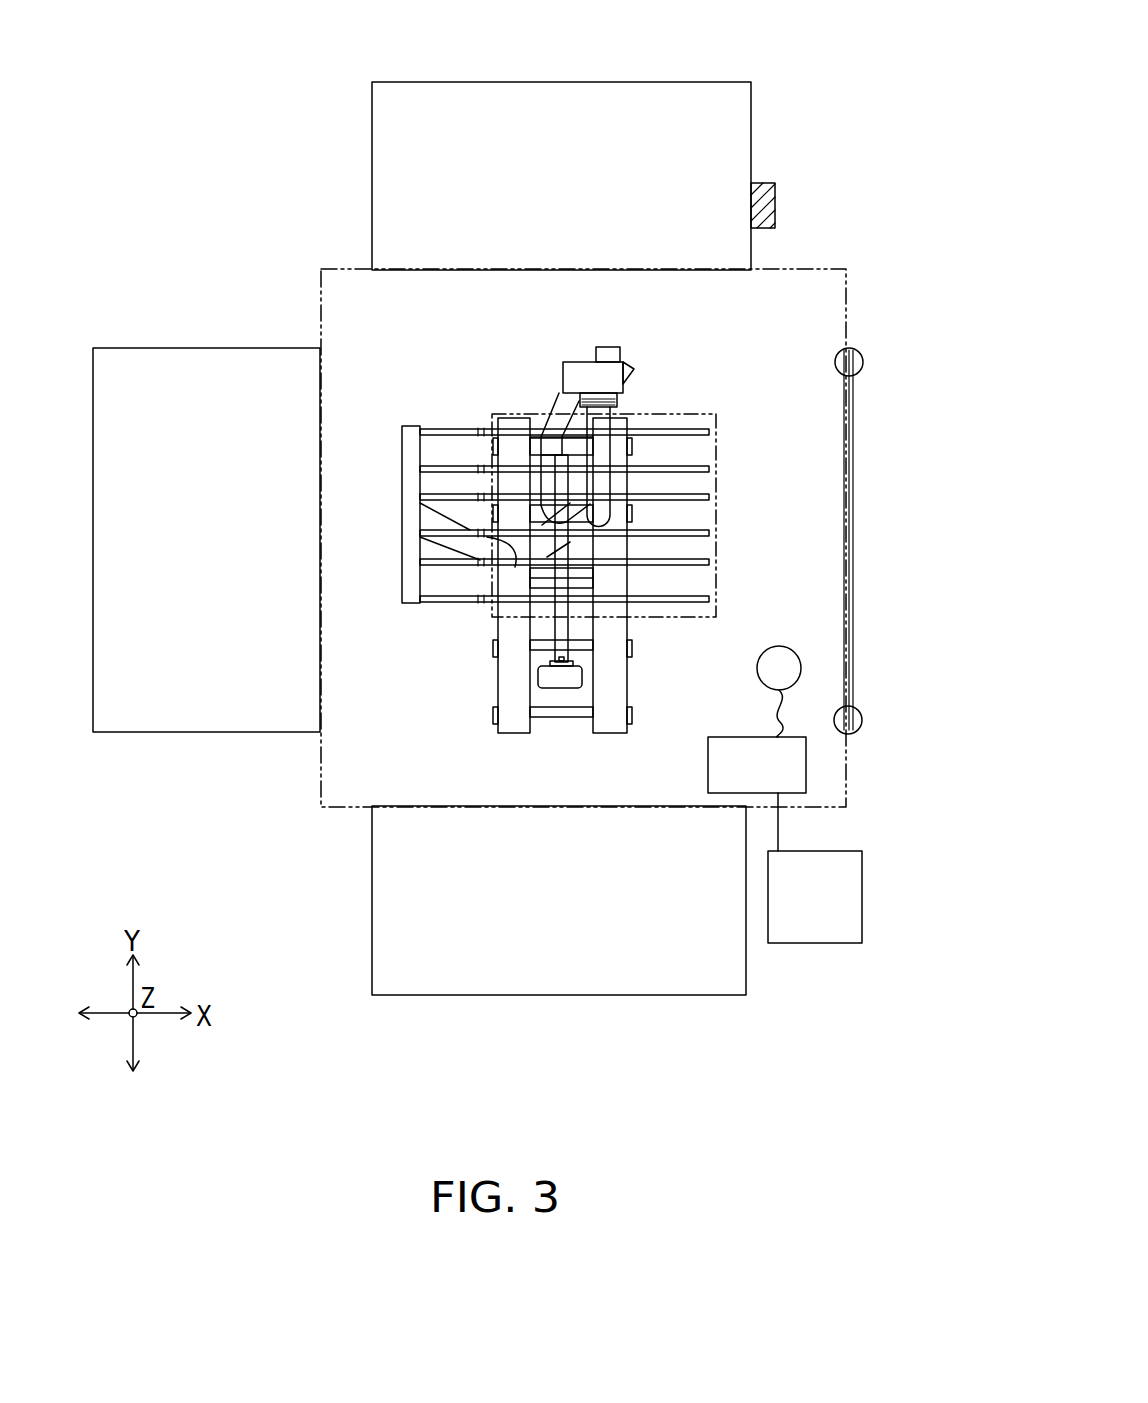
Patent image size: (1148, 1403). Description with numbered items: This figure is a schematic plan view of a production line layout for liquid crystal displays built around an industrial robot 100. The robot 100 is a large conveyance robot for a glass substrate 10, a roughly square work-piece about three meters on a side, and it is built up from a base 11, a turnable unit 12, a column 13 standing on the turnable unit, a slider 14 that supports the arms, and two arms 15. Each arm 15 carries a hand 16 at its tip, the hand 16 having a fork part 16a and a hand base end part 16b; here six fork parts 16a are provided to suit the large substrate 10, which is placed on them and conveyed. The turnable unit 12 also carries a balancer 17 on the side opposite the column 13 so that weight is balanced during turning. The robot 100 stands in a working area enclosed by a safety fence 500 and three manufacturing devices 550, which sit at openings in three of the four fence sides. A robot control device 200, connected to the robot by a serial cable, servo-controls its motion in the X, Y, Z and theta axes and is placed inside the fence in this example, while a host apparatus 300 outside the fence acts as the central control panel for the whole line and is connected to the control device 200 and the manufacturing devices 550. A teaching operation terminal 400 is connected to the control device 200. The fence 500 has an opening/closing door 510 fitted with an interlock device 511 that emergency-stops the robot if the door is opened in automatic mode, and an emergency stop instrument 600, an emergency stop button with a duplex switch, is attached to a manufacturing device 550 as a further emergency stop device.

The glass substrate 10 is at (716, 518).
The base 11 is at (630, 700).
The turnable unit 12 is at (556, 405).
The column 13 is at (578, 362).
The slider 14 is at (600, 445).
The arm 15 is at (470, 540).
The hand 16 is at (582, 530).
The fork part 16a is at (706, 430).
The hand base end part 16b is at (405, 603).
The balancer 17 is at (548, 690).
The industrial robot 100 is at (457, 393).
The robot control device 200 is at (708, 775).
The host apparatus 300 is at (792, 945).
The teaching operation terminal 400 is at (770, 672).
The safety fence 500 is at (342, 269).
The opening/closing door 510 is at (856, 568).
The interlock device 511 is at (863, 366).
The manufacturing device 550 is at (542, 82).
The emergency stop instrument 600 is at (763, 183).